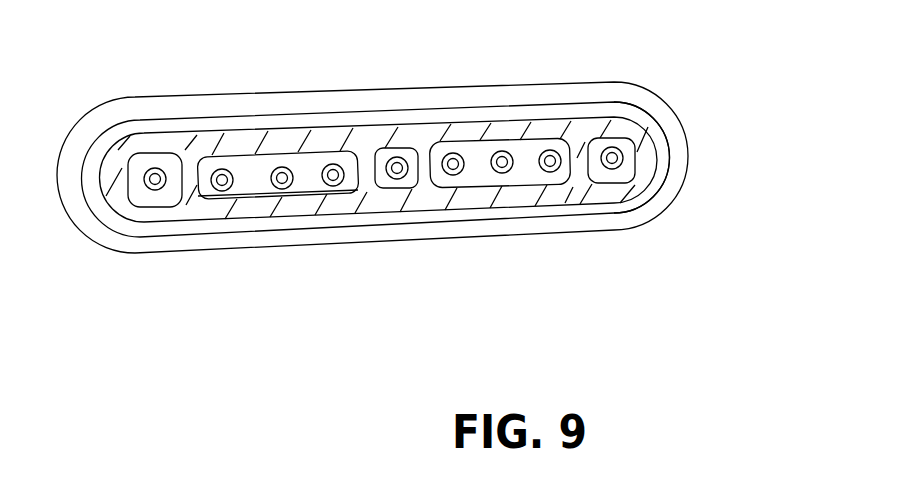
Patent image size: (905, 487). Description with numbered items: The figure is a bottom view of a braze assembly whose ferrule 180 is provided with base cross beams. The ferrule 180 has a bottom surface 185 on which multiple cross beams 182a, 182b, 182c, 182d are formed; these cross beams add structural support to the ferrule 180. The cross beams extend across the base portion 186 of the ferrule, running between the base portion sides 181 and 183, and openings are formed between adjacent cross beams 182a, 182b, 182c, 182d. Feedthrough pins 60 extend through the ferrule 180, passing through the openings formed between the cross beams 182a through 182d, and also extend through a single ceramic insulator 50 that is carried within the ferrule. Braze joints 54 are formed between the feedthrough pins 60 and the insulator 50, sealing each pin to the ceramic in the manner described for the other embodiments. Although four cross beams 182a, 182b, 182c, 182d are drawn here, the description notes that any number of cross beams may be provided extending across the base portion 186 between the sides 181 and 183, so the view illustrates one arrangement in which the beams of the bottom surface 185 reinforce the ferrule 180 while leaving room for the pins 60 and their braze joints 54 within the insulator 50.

The ferrule 180 is at (668, 117).
The base portion side 181 is at (322, 120).
The base portion 186 is at (658, 163).
The base portion side 183 is at (467, 210).
The cross beam 182a is at (190, 177).
The cross beam 182b is at (380, 147).
The cross beam 182c is at (422, 157).
The cross beam 182d is at (580, 157).
The single ceramic insulator 50 is at (263, 192).
The braze joint 54 is at (283, 190).
The feedthrough pin 60 is at (155, 190).
The bottom surface 185 is at (607, 190).